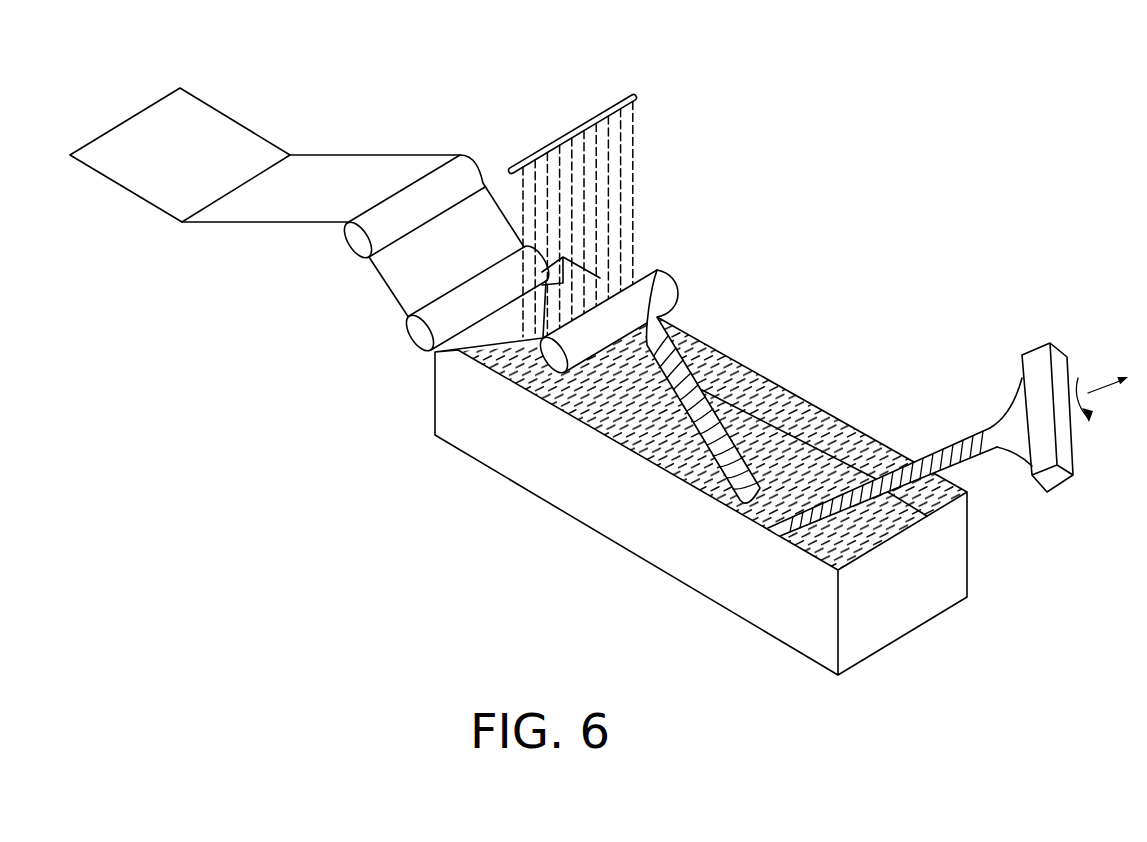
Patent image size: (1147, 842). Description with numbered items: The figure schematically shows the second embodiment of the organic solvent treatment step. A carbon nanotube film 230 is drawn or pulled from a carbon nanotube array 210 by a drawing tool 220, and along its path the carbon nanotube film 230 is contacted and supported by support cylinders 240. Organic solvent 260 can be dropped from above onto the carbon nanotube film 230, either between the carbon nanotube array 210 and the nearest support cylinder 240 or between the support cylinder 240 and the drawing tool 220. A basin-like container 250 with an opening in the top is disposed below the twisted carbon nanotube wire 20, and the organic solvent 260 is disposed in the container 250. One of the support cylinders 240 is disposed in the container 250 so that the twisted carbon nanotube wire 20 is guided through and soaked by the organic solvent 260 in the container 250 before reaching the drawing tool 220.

The twisted carbon nanotube wire 20 is at (702, 388).
The carbon nanotube array 210 is at (202, 145).
The drawing tool 220 is at (1042, 362).
The carbon nanotube film 230 is at (313, 167).
The support cylinder 240 is at (552, 355).
The container 250 is at (940, 568).
The organic solvent 260 is at (620, 204).